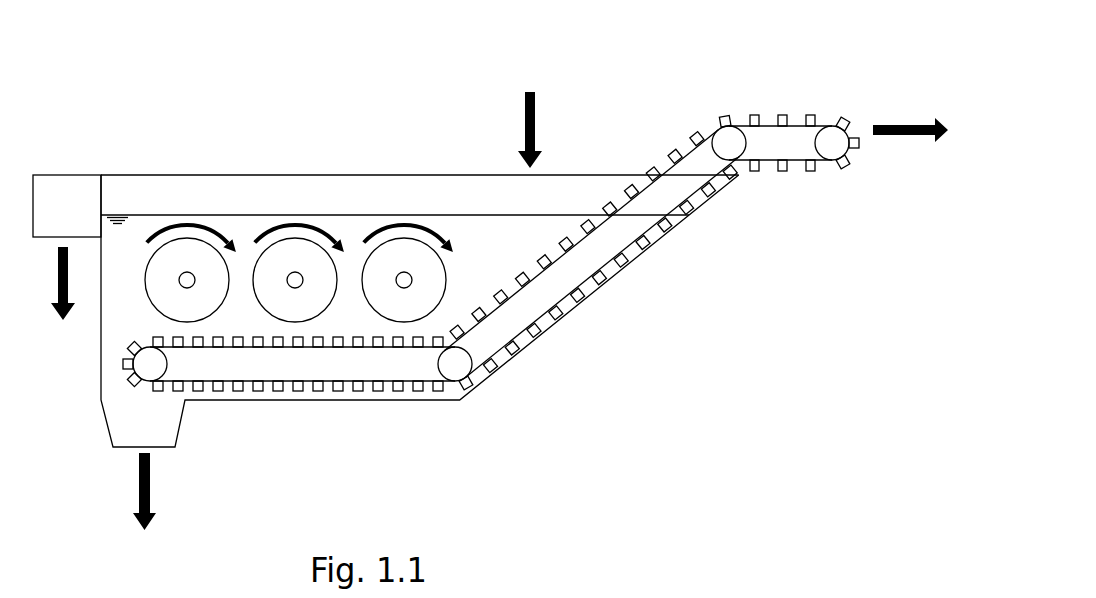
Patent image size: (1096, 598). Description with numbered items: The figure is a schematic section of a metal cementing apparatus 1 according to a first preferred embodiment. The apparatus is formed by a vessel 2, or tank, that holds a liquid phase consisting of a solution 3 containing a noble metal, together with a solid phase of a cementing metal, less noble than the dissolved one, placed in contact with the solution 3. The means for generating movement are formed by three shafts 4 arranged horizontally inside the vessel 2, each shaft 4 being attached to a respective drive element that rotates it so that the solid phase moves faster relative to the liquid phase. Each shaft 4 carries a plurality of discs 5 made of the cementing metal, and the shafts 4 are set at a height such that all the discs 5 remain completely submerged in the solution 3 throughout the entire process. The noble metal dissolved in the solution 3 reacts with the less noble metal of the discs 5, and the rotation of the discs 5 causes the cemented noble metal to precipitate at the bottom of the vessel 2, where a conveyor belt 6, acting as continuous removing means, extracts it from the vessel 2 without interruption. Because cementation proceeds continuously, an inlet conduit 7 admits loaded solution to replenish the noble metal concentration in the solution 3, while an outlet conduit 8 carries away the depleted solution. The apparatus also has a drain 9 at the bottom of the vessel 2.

The metal cementing apparatus 1 is at (185, 117).
The vessel 2 is at (100, 340).
The solution 3 is at (507, 252).
The shaft 4 is at (187, 280).
The disc 5 is at (313, 300).
The conveyor belt 6 is at (688, 150).
The inlet conduit 7 is at (523, 123).
The outlet conduit 8 is at (62, 323).
The drain 9 is at (152, 497).